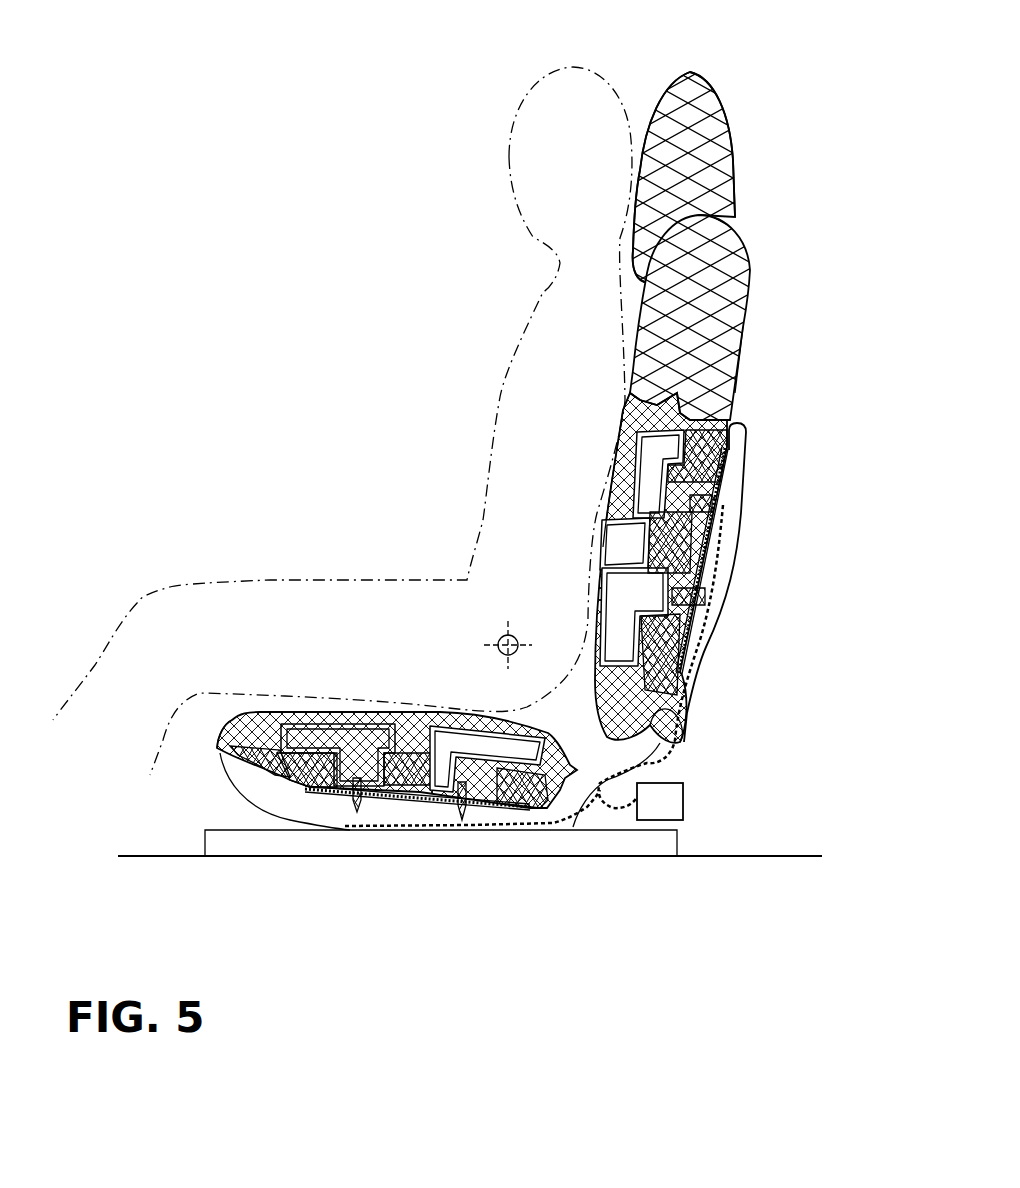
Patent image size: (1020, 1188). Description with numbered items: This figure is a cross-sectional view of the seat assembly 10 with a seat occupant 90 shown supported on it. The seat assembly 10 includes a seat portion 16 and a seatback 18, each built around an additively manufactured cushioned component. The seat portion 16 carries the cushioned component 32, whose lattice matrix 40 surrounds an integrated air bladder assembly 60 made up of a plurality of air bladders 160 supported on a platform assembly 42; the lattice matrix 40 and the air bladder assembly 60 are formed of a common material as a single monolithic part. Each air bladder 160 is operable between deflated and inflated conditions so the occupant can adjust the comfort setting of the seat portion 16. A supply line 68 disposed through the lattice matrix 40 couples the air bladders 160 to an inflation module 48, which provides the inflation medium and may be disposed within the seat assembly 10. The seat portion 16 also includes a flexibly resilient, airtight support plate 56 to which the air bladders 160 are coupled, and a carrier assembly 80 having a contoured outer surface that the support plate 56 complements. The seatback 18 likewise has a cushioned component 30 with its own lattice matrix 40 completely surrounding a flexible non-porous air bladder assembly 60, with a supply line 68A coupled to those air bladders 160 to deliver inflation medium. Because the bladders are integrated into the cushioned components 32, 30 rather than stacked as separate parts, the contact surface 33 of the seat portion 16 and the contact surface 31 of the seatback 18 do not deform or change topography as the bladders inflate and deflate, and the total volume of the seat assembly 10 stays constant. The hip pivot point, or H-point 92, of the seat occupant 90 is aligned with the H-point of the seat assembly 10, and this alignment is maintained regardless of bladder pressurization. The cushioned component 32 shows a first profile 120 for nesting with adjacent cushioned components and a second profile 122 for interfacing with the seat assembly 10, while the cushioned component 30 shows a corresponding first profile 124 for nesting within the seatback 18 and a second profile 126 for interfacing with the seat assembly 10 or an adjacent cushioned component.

The seat assembly 10 is at (782, 515).
The seat portion 16 is at (277, 800).
The seatback 18 is at (735, 475).
The cushioned component 30 is at (562, 420).
The contact surface 31 is at (624, 415).
The cushioned component 32 is at (208, 721).
The contact surface 33 is at (284, 718).
The lattice matrix 40 is at (744, 313).
The platform assembly 42 is at (742, 400).
The inflation module 48 is at (683, 800).
The support plate 56 is at (700, 660).
The air bladder assembly 60 is at (480, 703).
The supply line 68 is at (567, 830).
The supply line 68A is at (690, 687).
The carrier assembly 80 is at (682, 550).
The seat occupant 90 is at (517, 125).
The H-point 92 is at (515, 653).
The first profile 120 is at (227, 745).
The second profile 122 is at (573, 827).
The first profile 124 is at (749, 367).
The second profile 126 is at (678, 740).
The air bladder 160 is at (620, 575).